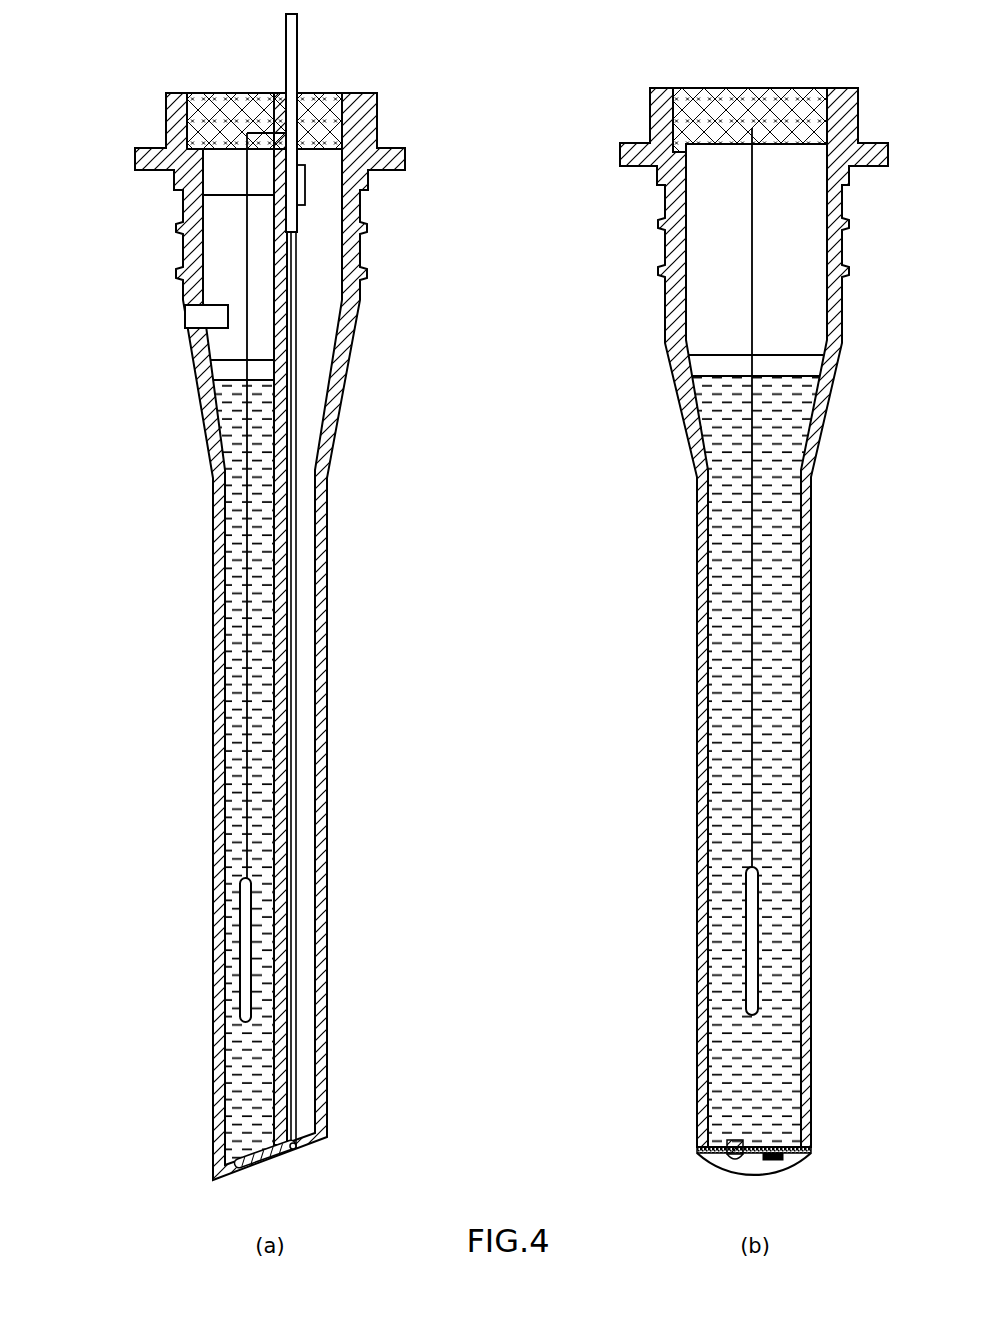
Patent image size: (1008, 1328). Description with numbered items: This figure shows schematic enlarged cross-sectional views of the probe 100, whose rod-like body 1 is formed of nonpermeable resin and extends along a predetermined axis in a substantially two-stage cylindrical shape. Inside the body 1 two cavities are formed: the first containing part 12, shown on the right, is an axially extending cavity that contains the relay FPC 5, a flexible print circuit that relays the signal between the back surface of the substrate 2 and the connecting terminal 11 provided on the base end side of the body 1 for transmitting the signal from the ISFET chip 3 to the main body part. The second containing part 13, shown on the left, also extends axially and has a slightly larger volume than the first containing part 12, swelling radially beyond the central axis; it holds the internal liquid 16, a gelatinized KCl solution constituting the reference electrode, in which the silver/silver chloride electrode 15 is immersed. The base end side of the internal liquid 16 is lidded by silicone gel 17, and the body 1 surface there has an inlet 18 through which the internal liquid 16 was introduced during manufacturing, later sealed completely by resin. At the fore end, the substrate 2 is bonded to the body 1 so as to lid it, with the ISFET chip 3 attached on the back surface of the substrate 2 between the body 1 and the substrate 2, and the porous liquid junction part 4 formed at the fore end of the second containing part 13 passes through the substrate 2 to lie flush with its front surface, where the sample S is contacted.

The probe 100 is at (150, 90).
The body 1 is at (172, 664).
The connecting terminal 11 is at (284, 35).
The first containing part 12 is at (316, 300).
The relay FPC 5 is at (297, 348).
The second containing part 13 is at (232, 265).
The inlet 18 is at (185, 318).
The silicone gel 17 is at (225, 366).
The internal liquid 16 is at (232, 533).
The silver/silver chloride electrode 15 is at (240, 899).
The ISFET chip 3 is at (216, 1164).
The substrate 2 is at (328, 1138).
The liquid junction part 4 is at (735, 1160).
The sample S is at (279, 1179).